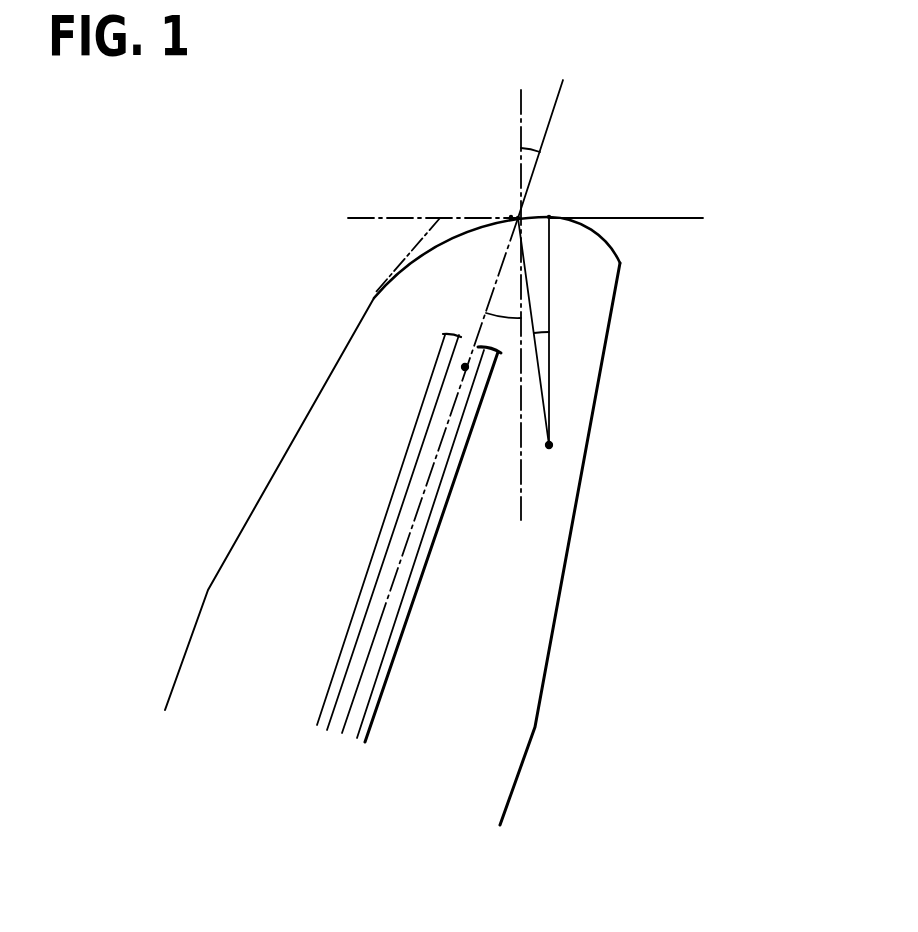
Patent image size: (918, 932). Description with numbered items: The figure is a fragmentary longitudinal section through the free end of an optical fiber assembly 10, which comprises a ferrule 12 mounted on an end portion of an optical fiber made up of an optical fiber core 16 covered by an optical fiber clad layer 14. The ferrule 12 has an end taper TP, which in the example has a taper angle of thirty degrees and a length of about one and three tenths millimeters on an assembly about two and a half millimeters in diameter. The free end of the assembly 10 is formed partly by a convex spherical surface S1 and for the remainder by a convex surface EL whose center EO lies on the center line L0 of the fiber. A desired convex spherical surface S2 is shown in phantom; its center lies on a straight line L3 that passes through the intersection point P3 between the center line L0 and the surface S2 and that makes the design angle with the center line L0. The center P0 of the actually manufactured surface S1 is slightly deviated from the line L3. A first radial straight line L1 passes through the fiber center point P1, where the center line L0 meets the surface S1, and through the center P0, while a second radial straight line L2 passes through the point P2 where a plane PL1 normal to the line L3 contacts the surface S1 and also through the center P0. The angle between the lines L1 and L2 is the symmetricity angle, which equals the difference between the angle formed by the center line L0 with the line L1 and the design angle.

The optical fiber assembly 10 is at (295, 520).
The ferrule 12 is at (300, 473).
The optical fiber clad layer 14 is at (382, 546).
The optical fiber core 16 is at (388, 568).
The plane PL1 is at (670, 221).
The center line L0 is at (567, 83).
The first radial straight line L1 is at (541, 381).
The second radial straight line L2 is at (550, 278).
The straight line L3 is at (518, 118).
The center of the convex spherical surface P0 is at (551, 446).
The center point of the optical fiber P1 is at (511, 216).
The point of contact P2 is at (552, 214).
The intersection point P3 is at (517, 214).
The convex spherical surface S1 is at (423, 253).
The desired convex spherical surface S2 is at (476, 216).
The convex surface EL is at (610, 241).
The taper TP is at (559, 600).
The center of the convex surface EO is at (462, 367).